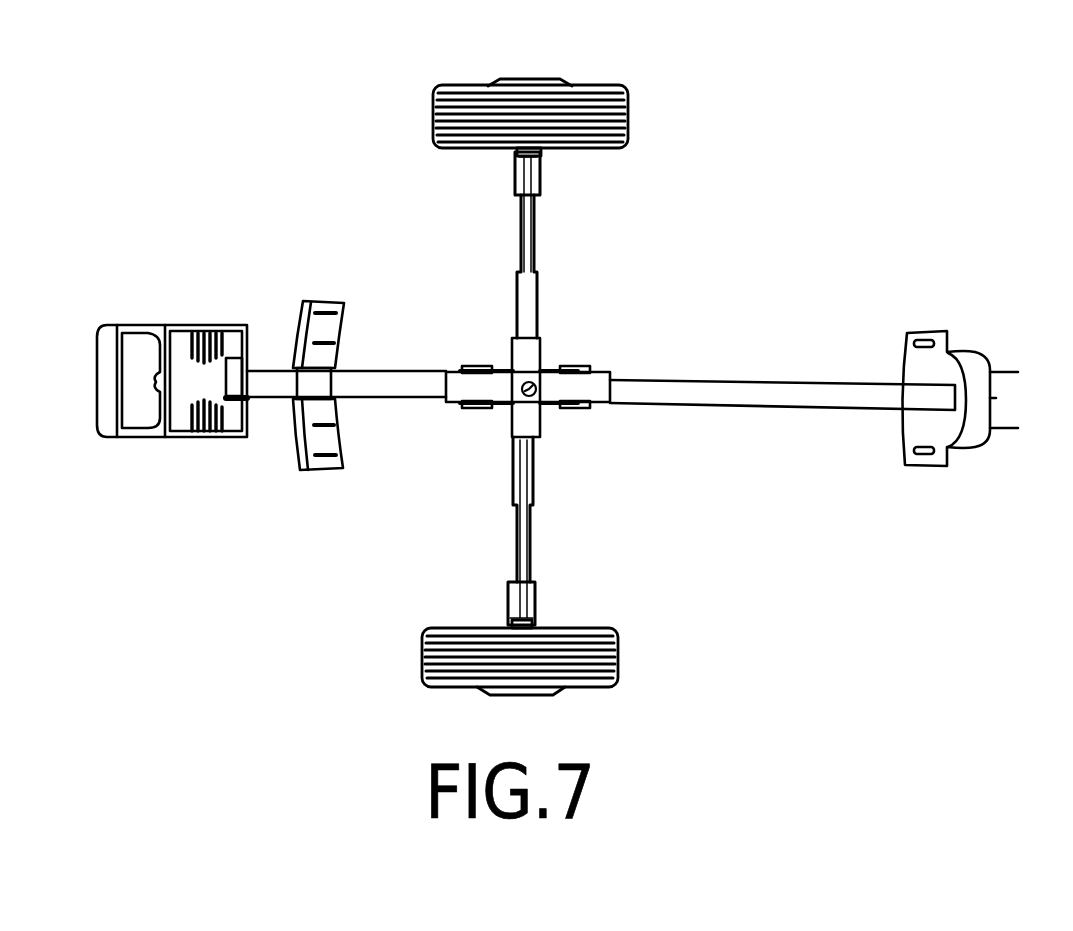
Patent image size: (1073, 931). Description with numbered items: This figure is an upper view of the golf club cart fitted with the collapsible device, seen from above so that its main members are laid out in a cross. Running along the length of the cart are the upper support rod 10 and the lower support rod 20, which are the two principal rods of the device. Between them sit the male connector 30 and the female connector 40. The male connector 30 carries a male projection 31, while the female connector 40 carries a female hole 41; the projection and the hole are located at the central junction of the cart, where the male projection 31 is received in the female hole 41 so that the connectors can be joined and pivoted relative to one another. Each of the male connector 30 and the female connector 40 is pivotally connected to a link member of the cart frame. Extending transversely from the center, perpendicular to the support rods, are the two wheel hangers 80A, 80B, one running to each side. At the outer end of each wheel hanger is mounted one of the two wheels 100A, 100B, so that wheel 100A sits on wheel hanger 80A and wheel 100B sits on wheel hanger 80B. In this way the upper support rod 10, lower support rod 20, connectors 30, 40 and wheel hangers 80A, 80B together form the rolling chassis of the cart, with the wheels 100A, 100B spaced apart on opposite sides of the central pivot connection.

The upper support rod 10 is at (360, 383).
The lower support rod 20 is at (772, 392).
The male connector 30 is at (592, 388).
The male projection 31 is at (512, 407).
The female connector 40 is at (465, 385).
The female hole 41 is at (529, 389).
The wheel hanger 80A is at (525, 527).
The wheel hanger 80B is at (530, 222).
The wheel 100A is at (620, 650).
The wheel 100B is at (627, 106).